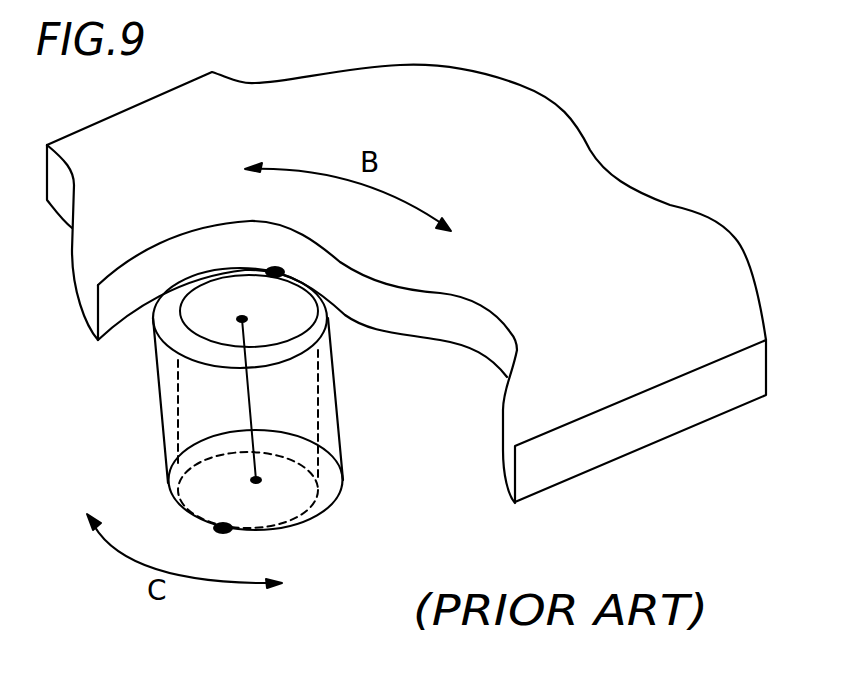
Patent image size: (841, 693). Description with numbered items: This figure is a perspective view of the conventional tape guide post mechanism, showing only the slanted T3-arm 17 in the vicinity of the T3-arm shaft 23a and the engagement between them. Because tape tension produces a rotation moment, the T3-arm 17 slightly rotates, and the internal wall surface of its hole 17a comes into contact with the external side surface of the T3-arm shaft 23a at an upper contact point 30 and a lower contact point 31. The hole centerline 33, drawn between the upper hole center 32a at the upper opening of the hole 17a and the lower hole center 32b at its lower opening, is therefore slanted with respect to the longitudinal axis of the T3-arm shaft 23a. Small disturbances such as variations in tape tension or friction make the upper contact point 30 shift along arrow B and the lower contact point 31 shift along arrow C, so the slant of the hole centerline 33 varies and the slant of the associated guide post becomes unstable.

The T3-arm 17 is at (697, 230).
The hole 17a is at (337, 373).
The T3-arm shaft 23a is at (318, 390).
The upper contact point 30 is at (272, 268).
The lower contact point 31 is at (216, 530).
The upper hole center 32a is at (237, 320).
The lower hole center 32b is at (250, 480).
The hole centerline 33 is at (247, 400).